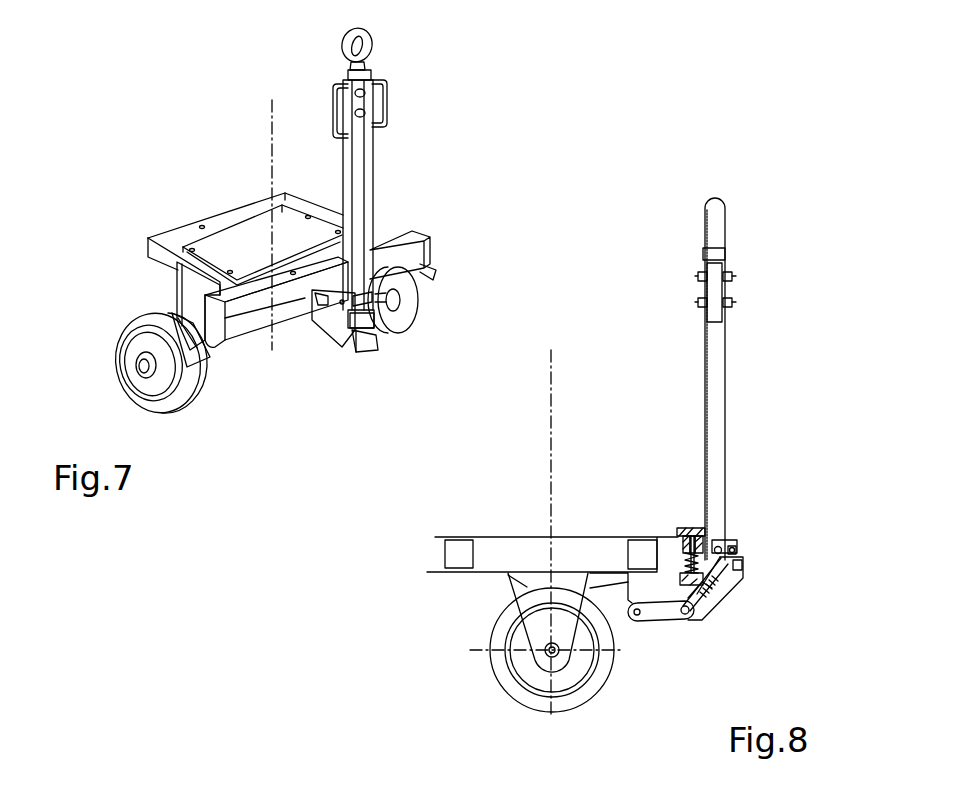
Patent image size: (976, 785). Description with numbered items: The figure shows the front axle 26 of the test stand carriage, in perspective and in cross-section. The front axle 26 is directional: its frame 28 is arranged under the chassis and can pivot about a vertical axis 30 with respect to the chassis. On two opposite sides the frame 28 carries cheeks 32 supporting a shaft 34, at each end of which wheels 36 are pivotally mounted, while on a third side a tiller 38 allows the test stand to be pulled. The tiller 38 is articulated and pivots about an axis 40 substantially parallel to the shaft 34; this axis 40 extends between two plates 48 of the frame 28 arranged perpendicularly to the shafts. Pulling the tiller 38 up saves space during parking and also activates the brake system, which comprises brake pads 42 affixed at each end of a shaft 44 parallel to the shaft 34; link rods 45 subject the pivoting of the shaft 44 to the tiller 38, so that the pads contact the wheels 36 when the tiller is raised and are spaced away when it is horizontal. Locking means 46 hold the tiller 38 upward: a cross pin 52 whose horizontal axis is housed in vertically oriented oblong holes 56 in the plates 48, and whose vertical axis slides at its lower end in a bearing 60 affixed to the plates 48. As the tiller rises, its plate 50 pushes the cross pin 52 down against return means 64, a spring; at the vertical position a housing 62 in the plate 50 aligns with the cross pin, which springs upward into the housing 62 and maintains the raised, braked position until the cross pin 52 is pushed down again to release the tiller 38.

In FIG. 7, the front axle 26 is at (175, 133).
In FIG. 8, the front axle 26 is at (531, 508).
In FIG. 7, the frame 28 is at (250, 210).
In FIG. 8, the frame 28 is at (552, 554).
In FIG. 7, the vertical axis 30 is at (273, 128).
In FIG. 8, the vertical axis 30 is at (551, 385).
In FIG. 7, the cheeks 32 is at (190, 296).
In FIG. 8, the cheeks 32 is at (507, 573).
In FIG. 7, the shaft 34 is at (237, 347).
In FIG. 8, the shaft 34 is at (560, 657).
In FIG. 8, the wheels 36 is at (523, 698).
In FIG. 7, the tiller 38 is at (362, 175).
In FIG. 8, the tiller 38 is at (717, 368).
In FIG. 8, the axis 40 is at (729, 539).
In FIG. 7, the brake pads 42 is at (200, 365).
In FIG. 8, the shaft 44 is at (638, 618).
In FIG. 8, the link rods 45 is at (695, 622).
In FIG. 7, the locking means 46 is at (363, 343).
In FIG. 8, the locking means 46 is at (675, 514).
In FIG. 7, the plates 48 is at (334, 338).
In FIG. 8, the plates 48 is at (728, 577).
In FIG. 8, the plate 50 is at (690, 530).
In FIG. 7, the cross pin 52 is at (320, 312).
In FIG. 8, the cross pin 52 is at (684, 545).
In FIG. 7, the oblong holes 56 is at (355, 334).
In FIG. 8, the bearing 60 is at (680, 577).
In FIG. 8, the housing 62 is at (707, 535).
In FIG. 8, the return means 64 is at (716, 563).